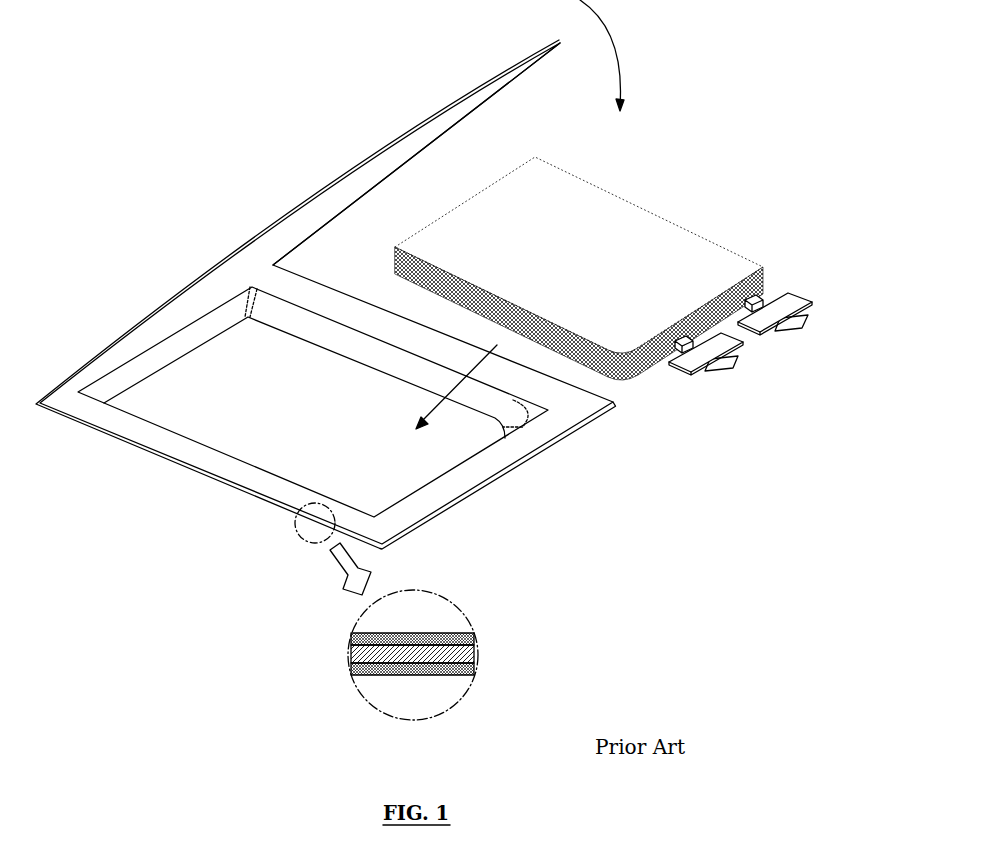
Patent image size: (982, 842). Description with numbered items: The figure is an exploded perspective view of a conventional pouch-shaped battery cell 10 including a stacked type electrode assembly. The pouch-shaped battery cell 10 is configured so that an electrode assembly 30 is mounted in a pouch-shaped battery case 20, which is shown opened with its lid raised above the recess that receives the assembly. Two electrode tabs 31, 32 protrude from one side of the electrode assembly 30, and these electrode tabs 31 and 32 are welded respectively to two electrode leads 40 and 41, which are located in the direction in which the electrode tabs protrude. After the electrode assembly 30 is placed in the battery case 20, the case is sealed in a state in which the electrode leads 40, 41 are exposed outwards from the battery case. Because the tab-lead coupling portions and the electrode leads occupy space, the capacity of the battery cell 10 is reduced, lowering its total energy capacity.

The pouch-shaped battery cell 10 is at (85, 33).
The pouch-shaped battery case 20 is at (146, 268).
The electrode assembly 30 is at (638, 233).
The electrode tab 31 is at (748, 294).
The electrode tab 32 is at (674, 336).
The electrode lead 40 is at (809, 326).
The electrode lead 41 is at (736, 366).